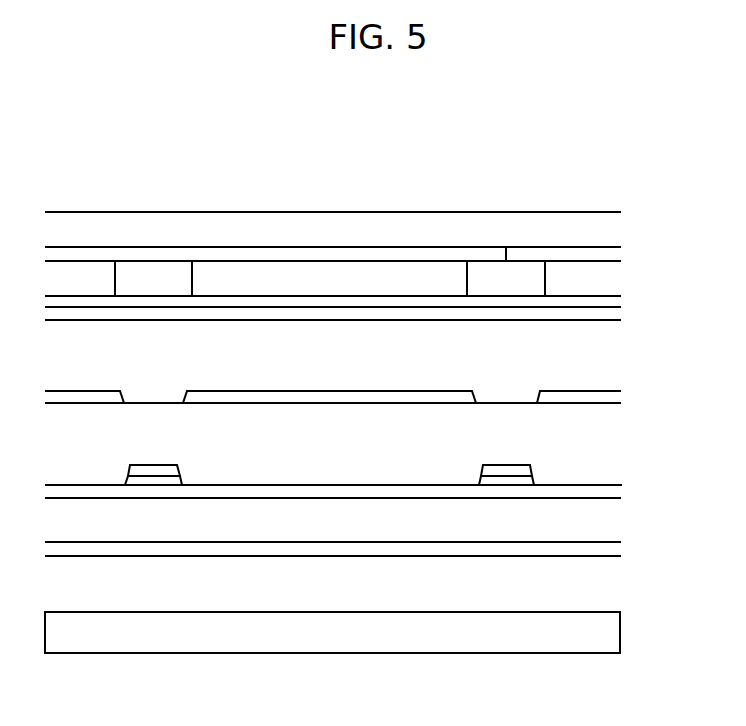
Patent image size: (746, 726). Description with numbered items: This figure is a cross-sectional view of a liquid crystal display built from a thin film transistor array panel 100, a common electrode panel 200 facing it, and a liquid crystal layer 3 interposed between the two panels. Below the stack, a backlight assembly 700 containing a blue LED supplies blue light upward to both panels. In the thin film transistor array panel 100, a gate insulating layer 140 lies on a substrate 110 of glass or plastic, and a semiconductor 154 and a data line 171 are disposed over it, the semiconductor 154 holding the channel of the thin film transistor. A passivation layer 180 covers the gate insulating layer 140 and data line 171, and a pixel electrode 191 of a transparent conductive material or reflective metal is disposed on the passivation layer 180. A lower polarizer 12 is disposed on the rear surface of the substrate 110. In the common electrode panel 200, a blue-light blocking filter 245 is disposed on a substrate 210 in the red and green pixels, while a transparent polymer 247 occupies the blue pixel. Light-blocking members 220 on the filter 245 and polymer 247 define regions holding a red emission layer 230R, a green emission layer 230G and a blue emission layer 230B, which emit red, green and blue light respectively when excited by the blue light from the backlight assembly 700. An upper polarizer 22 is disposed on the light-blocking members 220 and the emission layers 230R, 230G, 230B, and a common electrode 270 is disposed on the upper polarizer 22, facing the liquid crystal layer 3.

The common electrode panel 200 is at (384, 254).
The substrate 210 is at (610, 229).
The light-blocking member 220 is at (145, 276).
The blue-light blocking filter 245 is at (383, 256).
The transparent polymer 247 is at (558, 251).
The red emission layer 230R is at (93, 289).
The green emission layer 230G is at (351, 289).
The blue emission layer 230B is at (607, 289).
The upper polarizer 22 is at (608, 300).
The common electrode 270 is at (359, 324).
The liquid crystal layer 3 is at (610, 355).
The thin film transistor array panel 100 is at (384, 487).
The pixel electrode 191 is at (610, 394).
The passivation layer 180 is at (610, 441).
The data line 171 is at (143, 470).
The semiconductor 154 is at (160, 482).
The gate insulating layer 140 is at (612, 492).
The substrate 110 is at (610, 520).
The lower polarizer 12 is at (354, 552).
The backlight assembly 700 is at (621, 631).